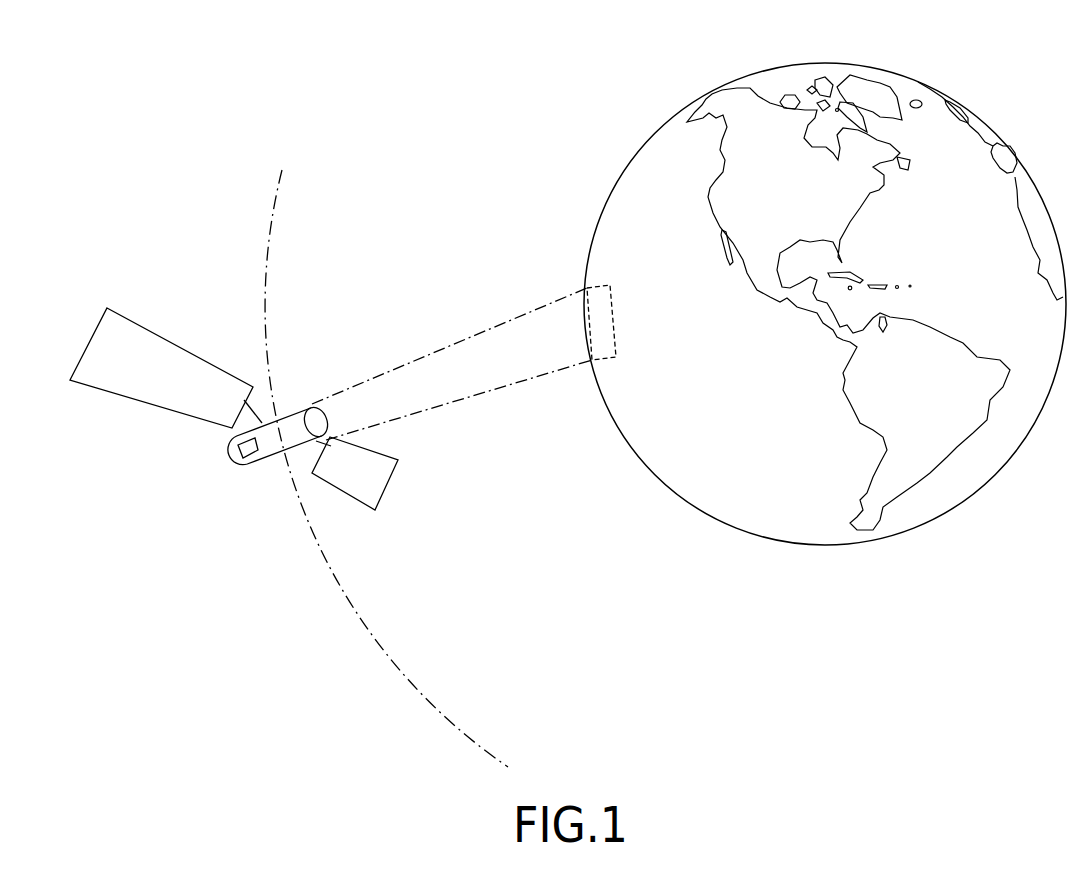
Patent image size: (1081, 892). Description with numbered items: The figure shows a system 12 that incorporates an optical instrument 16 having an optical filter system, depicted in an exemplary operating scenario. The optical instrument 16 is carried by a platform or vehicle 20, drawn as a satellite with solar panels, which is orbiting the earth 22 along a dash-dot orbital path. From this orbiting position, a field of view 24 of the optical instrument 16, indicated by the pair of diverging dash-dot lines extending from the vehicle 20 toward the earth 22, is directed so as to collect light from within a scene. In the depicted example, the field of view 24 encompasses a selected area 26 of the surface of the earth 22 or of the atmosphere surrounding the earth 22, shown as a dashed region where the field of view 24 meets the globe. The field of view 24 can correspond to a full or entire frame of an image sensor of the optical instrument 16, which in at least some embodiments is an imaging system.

The system 12 is at (180, 301).
The optical instrument 16 is at (240, 452).
The platform or vehicle 20 is at (254, 470).
The earth 22 is at (742, 105).
The field of view 24 is at (543, 373).
The selected area 26 is at (614, 313).